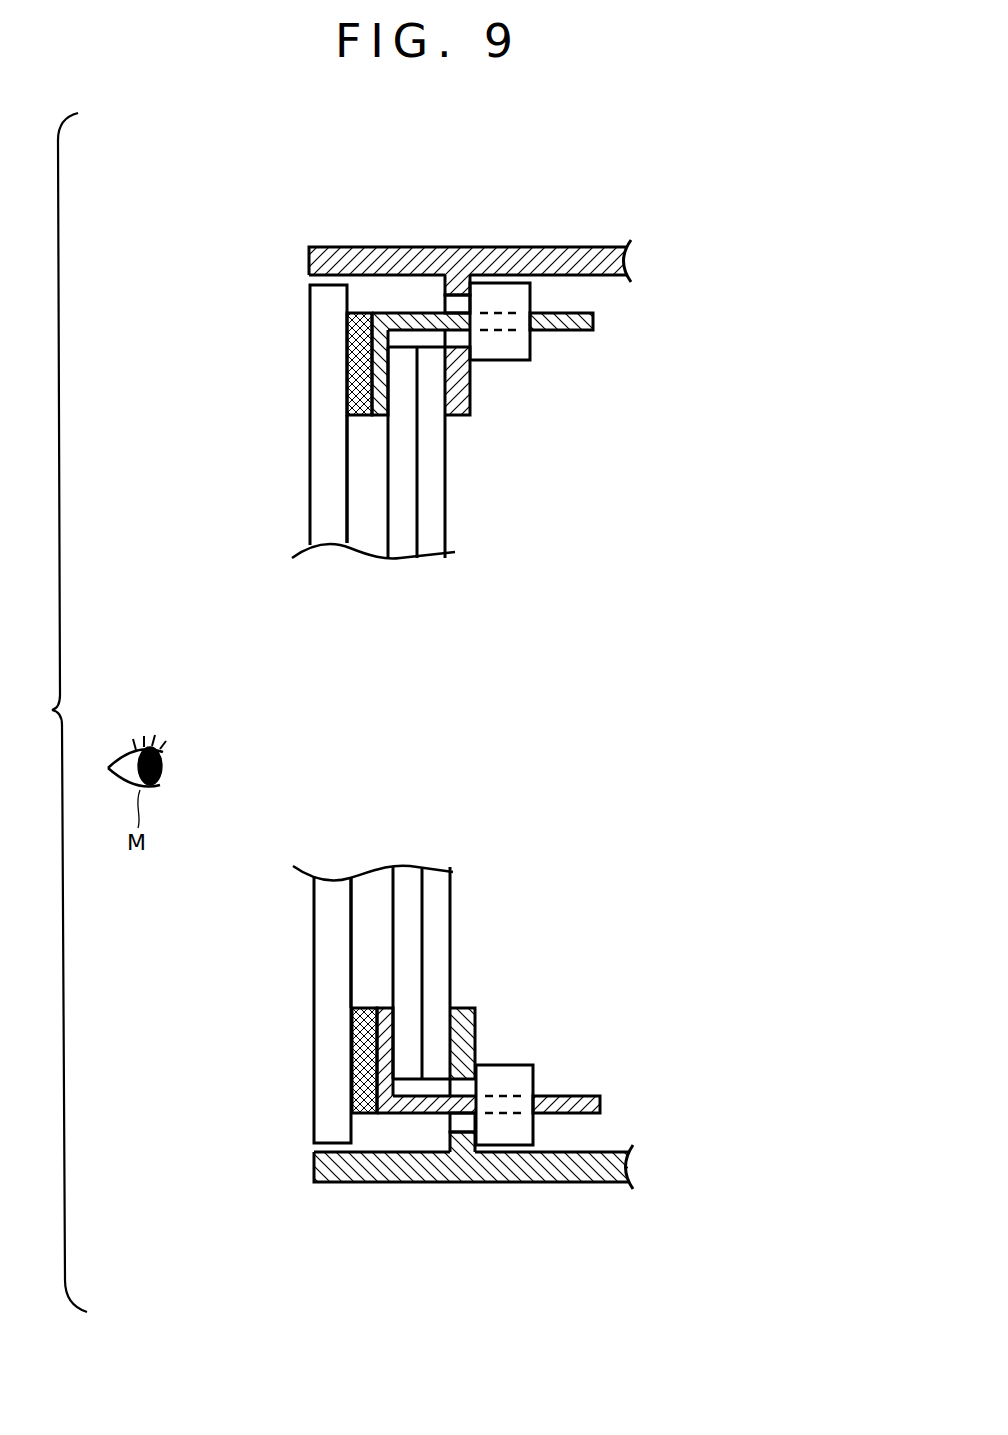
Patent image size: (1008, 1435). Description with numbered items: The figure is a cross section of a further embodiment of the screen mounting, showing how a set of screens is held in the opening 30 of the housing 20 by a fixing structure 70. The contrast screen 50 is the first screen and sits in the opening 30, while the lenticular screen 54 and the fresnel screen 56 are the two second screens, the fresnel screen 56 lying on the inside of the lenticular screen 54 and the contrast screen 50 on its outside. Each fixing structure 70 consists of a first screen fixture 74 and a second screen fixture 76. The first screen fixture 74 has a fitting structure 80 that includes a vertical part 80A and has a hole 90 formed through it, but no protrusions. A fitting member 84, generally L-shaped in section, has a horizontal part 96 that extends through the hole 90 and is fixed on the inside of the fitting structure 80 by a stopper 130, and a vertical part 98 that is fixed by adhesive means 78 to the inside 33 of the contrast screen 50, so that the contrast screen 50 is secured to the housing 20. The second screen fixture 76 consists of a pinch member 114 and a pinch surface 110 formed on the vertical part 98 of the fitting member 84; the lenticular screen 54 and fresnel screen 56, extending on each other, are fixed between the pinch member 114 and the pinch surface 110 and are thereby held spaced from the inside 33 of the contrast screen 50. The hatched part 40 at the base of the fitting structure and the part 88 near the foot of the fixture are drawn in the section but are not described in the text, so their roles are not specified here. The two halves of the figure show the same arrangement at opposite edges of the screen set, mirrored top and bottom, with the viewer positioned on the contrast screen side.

The housing 20 is at (580, 192).
The opening 30 is at (317, 571).
The inside of the contrast screen 33 is at (355, 442).
The housing plate 40 is at (510, 256).
The contrast screen 50 is at (323, 512).
The lenticular screen 54 is at (407, 548).
The fresnel screen 56 is at (432, 548).
The fixing structure 70 is at (672, 360).
The first screen fixture 74 is at (685, 311).
The second screen fixture 76 is at (512, 443).
The adhesive means 78 is at (348, 370).
The fitting structure 80 is at (430, 300).
The vertical part of the fitting structure 80A is at (456, 305).
The fitting member 84 is at (577, 352).
The recess 88 is at (366, 294).
The hole 90 is at (482, 290).
The horizontal part of the fitting member 96 is at (594, 320).
The vertical part of the fitting member 98 is at (376, 416).
The pinch surface 110 is at (393, 400).
The pinch member 114 is at (458, 405).
The stopper 130 is at (510, 352).